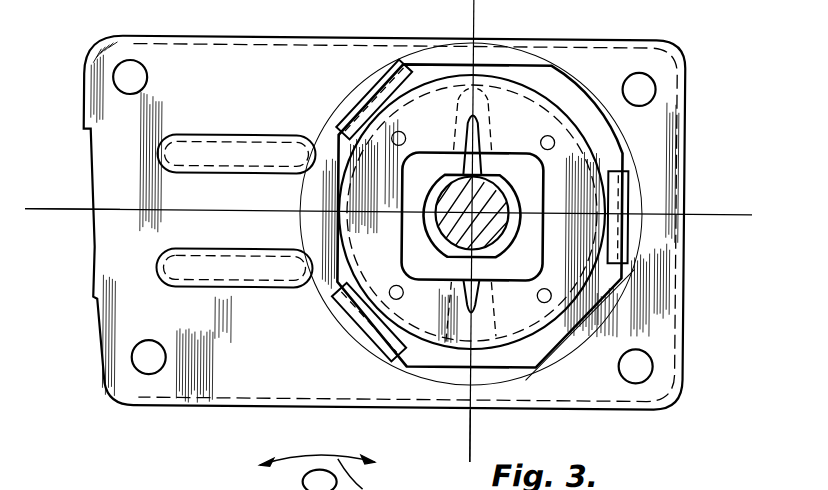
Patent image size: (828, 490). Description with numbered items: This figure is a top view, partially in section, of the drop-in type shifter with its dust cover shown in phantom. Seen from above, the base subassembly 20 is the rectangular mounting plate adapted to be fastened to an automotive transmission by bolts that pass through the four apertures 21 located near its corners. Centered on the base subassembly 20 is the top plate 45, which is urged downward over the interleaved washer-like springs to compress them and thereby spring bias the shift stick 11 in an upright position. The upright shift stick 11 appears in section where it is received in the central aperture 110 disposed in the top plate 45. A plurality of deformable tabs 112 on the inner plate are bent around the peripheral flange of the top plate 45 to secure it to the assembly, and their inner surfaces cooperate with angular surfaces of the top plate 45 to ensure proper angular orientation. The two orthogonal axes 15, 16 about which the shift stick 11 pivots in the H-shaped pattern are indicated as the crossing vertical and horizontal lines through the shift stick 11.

The shift stick 11 is at (488, 178).
The first orthogonal axis 15 is at (470, 438).
The second orthogonal axis 16 is at (43, 210).
The base subassembly 20 is at (262, 353).
The apertures 21 is at (137, 79).
The top plate 45 is at (420, 72).
The central aperture 110 is at (533, 182).
The deformable tabs 112 is at (365, 98).